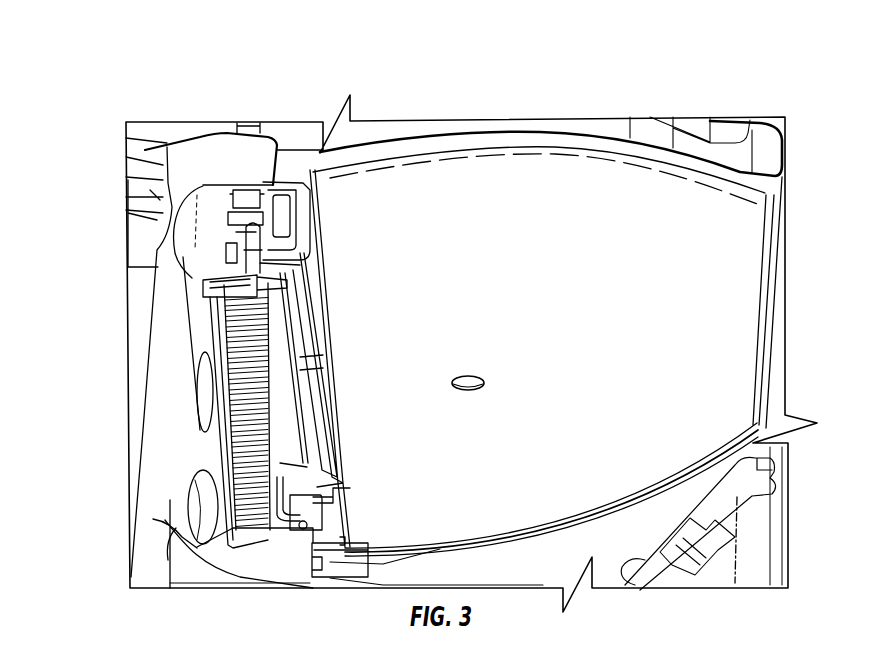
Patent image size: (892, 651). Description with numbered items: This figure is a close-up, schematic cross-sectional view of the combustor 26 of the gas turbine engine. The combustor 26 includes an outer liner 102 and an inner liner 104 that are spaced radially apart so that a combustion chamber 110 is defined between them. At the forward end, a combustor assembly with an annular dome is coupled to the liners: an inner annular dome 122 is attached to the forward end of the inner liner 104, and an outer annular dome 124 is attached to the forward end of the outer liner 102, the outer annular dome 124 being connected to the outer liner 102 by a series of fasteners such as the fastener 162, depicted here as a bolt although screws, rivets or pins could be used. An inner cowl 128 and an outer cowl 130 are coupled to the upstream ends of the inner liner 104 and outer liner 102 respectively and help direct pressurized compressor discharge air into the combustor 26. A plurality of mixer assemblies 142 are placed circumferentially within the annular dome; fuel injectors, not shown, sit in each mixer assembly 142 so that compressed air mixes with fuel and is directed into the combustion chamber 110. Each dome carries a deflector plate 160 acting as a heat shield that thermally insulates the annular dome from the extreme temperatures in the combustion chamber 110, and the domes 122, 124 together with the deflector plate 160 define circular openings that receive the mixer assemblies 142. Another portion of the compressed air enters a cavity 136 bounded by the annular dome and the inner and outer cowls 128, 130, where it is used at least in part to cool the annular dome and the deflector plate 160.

The combustor 26 is at (727, 90).
The outer liner 102 is at (571, 140).
The inner liner 104 is at (607, 510).
The combustion chamber 110 is at (611, 318).
The inner annular dome 122 is at (262, 553).
The outer annular dome 124 is at (222, 150).
The inner cowl 128 is at (153, 519).
The outer cowl 130 is at (163, 222).
The cavity 136 is at (210, 230).
The mixer assembly 142 is at (190, 487).
The deflector plate 160 is at (313, 217).
The fastener 162 is at (243, 202).